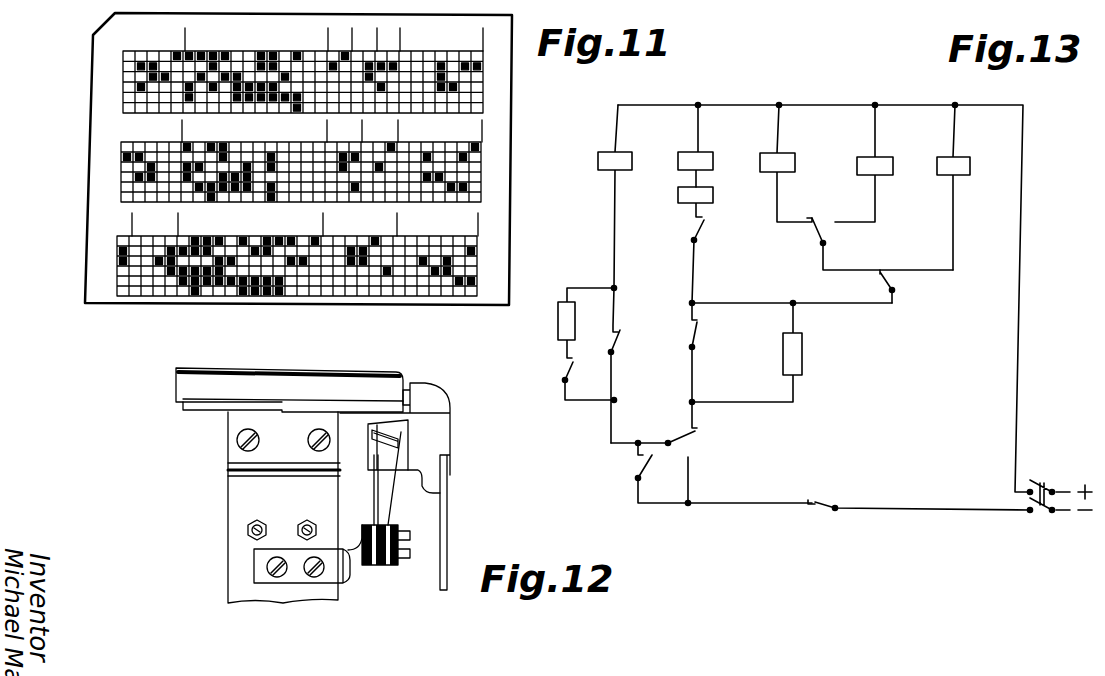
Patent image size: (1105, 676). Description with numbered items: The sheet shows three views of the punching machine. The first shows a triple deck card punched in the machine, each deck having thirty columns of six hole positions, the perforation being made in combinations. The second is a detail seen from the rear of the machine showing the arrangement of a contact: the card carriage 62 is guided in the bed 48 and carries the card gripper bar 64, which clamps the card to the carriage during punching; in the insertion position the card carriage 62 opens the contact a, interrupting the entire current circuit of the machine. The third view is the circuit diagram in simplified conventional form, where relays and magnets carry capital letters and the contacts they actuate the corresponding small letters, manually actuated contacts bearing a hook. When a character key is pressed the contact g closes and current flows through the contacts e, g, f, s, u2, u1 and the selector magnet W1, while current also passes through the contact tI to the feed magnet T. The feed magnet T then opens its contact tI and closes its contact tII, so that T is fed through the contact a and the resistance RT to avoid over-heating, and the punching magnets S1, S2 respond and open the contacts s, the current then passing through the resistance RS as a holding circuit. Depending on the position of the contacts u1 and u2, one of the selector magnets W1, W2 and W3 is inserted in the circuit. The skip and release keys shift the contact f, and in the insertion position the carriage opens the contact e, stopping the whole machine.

In FIG. 12, the card gripper bar 64 is at (291, 392).
In FIG. 12, the card carriage 62 is at (372, 427).
In FIG. 12, the bed 48 is at (430, 443).
In FIG. 12, the contact e is at (385, 477).
In FIG. 13, the contact e is at (919, 494).
In FIG. 13, the feed magnet T is at (628, 196).
In FIG. 13, the punching magnet S1 is at (709, 146).
In FIG. 13, the punching magnet S2 is at (709, 201).
In FIG. 13, the selector magnet W1 is at (794, 163).
In FIG. 13, the selector magnet W2 is at (881, 163).
In FIG. 13, the selector magnet W3 is at (971, 187).
In FIG. 13, the resistance RT is at (586, 323).
In FIG. 13, the resistance RS is at (763, 352).
In FIG. 13, the contact tI is at (622, 365).
In FIG. 13, the contact tII is at (709, 261).
In FIG. 13, the contact s is at (701, 352).
In FIG. 13, the contact a is at (589, 381).
In FIG. 13, the contact f is at (692, 452).
In FIG. 13, the contact g is at (724, 474).
In FIG. 13, the contact u1 is at (882, 244).
In FIG. 13, the contact u2 is at (902, 286).